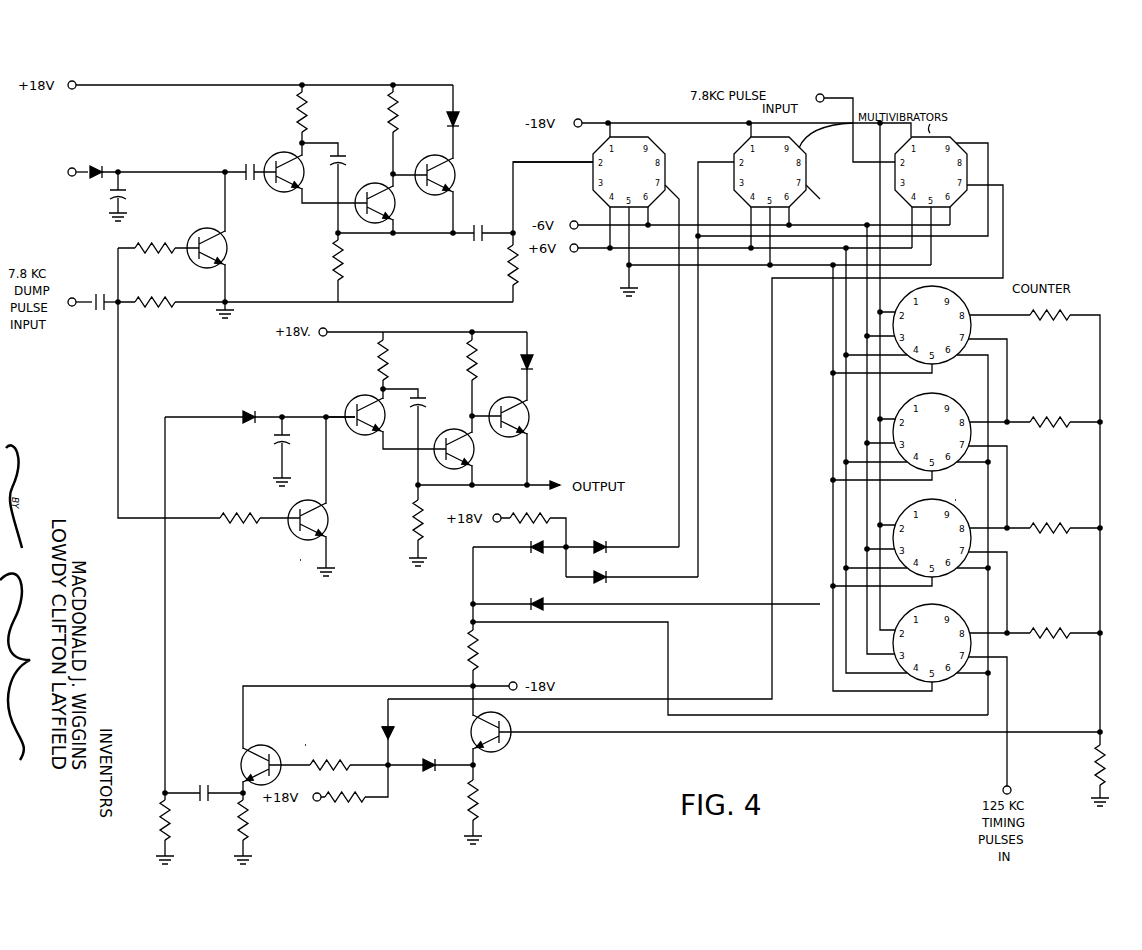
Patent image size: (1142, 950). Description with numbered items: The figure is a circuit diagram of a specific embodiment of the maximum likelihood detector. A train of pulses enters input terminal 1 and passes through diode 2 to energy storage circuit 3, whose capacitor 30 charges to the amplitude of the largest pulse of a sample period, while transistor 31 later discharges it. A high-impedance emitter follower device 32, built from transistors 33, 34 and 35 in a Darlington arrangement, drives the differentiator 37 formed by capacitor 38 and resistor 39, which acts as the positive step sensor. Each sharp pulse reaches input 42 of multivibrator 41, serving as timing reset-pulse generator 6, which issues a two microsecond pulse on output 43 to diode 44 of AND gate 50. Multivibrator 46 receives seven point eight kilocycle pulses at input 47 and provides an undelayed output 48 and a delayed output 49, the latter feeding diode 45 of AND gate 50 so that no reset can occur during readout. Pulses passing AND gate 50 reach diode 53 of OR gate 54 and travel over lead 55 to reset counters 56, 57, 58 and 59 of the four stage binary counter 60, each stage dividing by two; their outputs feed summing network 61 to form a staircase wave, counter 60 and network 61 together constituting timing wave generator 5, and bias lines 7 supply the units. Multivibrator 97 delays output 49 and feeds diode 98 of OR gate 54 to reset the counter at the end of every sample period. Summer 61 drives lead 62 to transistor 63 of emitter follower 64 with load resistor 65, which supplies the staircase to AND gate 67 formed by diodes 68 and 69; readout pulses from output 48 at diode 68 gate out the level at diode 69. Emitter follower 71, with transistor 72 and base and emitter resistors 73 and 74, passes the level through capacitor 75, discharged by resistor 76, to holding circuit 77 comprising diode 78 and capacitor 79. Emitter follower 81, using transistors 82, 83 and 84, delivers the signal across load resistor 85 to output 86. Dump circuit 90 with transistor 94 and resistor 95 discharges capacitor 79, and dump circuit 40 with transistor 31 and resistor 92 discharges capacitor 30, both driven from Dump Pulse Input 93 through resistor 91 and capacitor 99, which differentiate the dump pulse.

The input terminal 1 is at (72, 165).
The diode 2 is at (97, 162).
The energy storage circuit 3 is at (128, 168).
The timing wave generator 5 is at (962, 495).
The timing reset-pulse generator 6 is at (652, 119).
The bias lines 7 is at (764, 245).
The capacitor 30 is at (132, 197).
The transistor 31 is at (231, 250).
The emitter follower device 32 is at (356, 122).
The transistor 33 is at (277, 192).
The transistor 34 is at (399, 209).
The transistor 35 is at (454, 181).
The differentiator 37 is at (504, 241).
The capacitor 38 is at (479, 226).
The resistor 39 is at (527, 268).
The dump circuit 40 is at (206, 290).
The multivibrator 41 is at (629, 209).
The input 42 is at (569, 166).
The output 43 is at (677, 181).
The diode 44 is at (604, 537).
The diode 45 is at (606, 578).
The multivibrator 46 is at (931, 201).
The input 47 is at (860, 111).
The undelayed output 48 is at (1012, 238).
The delayed output 49 is at (1000, 165).
The AND gate 50 is at (596, 519).
The diode 53 is at (540, 552).
The OR gate 54 is at (504, 592).
The lead 55 is at (676, 667).
The counter 56 is at (961, 699).
The counter 57 is at (961, 567).
The counter 58 is at (961, 462).
The counter 59 is at (961, 500).
The four stage binary counter 60 is at (978, 311).
The summing network 61 is at (1054, 585).
The lead 62 is at (930, 739).
The transistor 63 is at (513, 754).
The emitter follower 64 is at (546, 723).
The load resistor 65 is at (486, 800).
The AND gate 67 is at (441, 725).
The diode 68 is at (377, 735).
The diode 69 is at (432, 775).
The emitter follower 71 is at (316, 738).
The transistor 72 is at (259, 743).
The base resistor 73 is at (331, 761).
The emitter resistor 74 is at (255, 818).
The capacitor 75 is at (203, 781).
The resistor 76 is at (177, 818).
The holding circuit 77 is at (213, 462).
The diode 78 is at (246, 407).
The capacitor 79 is at (295, 443).
The emitter follower 81 is at (460, 365).
The transistor 82 is at (360, 436).
The transistor 83 is at (475, 452).
The transistor 84 is at (530, 420).
The load resistor 85 is at (410, 515).
The output 86 is at (546, 482).
The dump circuit 90 is at (288, 582).
The resistor 91 is at (150, 311).
The resistor 92 is at (155, 251).
The Dump Pulse Input 93 is at (80, 295).
The transistor 94 is at (332, 524).
The resistor 95 is at (240, 514).
The multivibrator 97 is at (793, 195).
The diode 98 is at (548, 603).
The capacitor 99 is at (100, 312).